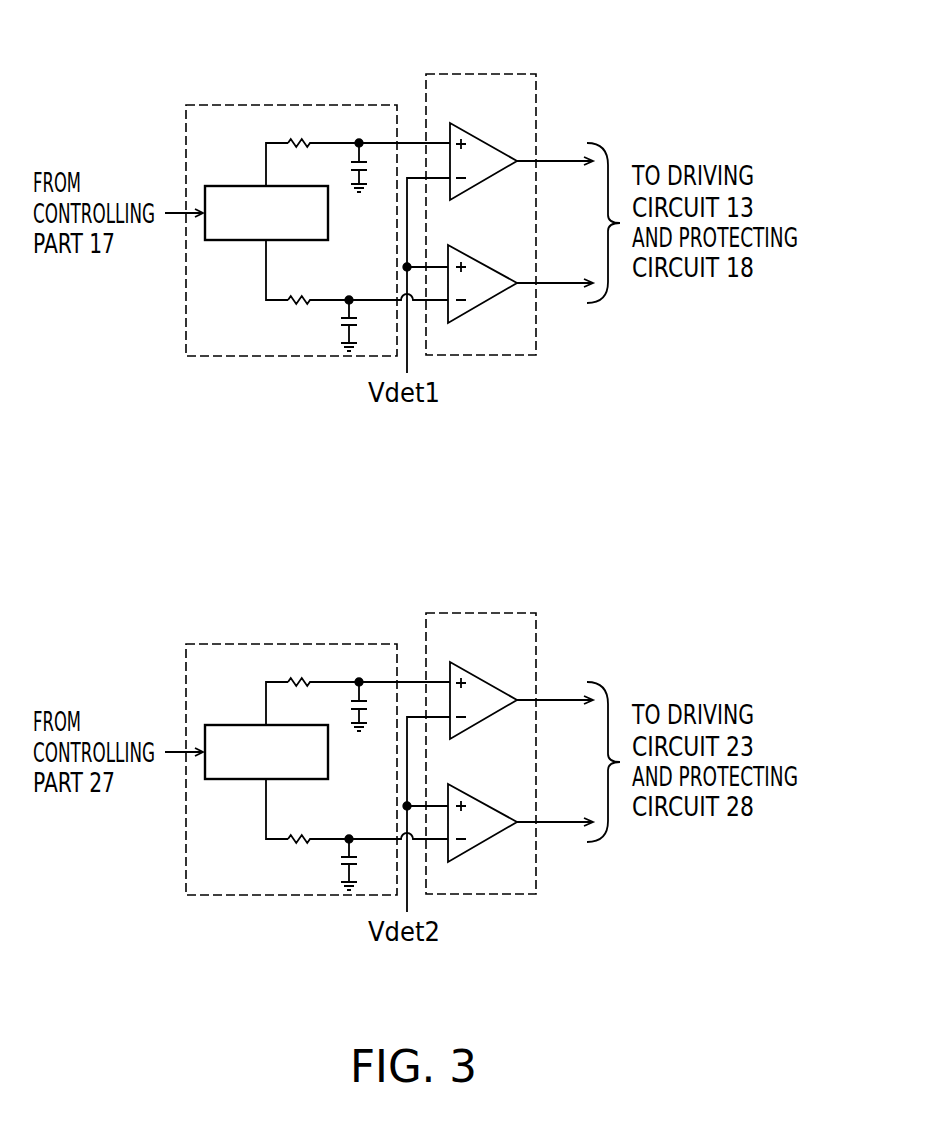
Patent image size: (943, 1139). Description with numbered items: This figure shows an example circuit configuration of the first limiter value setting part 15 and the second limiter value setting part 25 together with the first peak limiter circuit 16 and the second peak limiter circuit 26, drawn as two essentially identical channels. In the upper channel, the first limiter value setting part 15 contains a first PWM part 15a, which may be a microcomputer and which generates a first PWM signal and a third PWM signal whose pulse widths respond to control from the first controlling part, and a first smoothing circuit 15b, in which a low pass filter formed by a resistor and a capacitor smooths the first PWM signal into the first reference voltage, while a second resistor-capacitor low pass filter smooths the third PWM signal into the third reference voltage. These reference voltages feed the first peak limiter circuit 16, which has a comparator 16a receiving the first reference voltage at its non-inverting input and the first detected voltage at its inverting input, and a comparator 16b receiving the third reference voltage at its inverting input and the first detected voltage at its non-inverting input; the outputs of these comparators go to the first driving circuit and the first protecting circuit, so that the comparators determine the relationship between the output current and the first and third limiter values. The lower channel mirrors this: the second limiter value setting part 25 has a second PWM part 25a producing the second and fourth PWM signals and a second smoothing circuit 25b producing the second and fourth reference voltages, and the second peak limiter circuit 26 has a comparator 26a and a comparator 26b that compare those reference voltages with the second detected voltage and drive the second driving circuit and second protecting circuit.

The first limiter value setting part 15 is at (291, 105).
The first PWM part 15a is at (219, 241).
The first smoothing circuit 15b is at (327, 280).
The first peak limiter circuit 16 is at (481, 74).
The comparator 16a is at (482, 141).
The comparator 16b is at (482, 263).
The second limiter value setting part 25 is at (291, 644).
The second PWM part 25a is at (219, 780).
The second smoothing circuit 25b is at (327, 819).
The second peak limiter circuit 26 is at (481, 613).
The comparator 26a is at (482, 680).
The comparator 26b is at (482, 802).